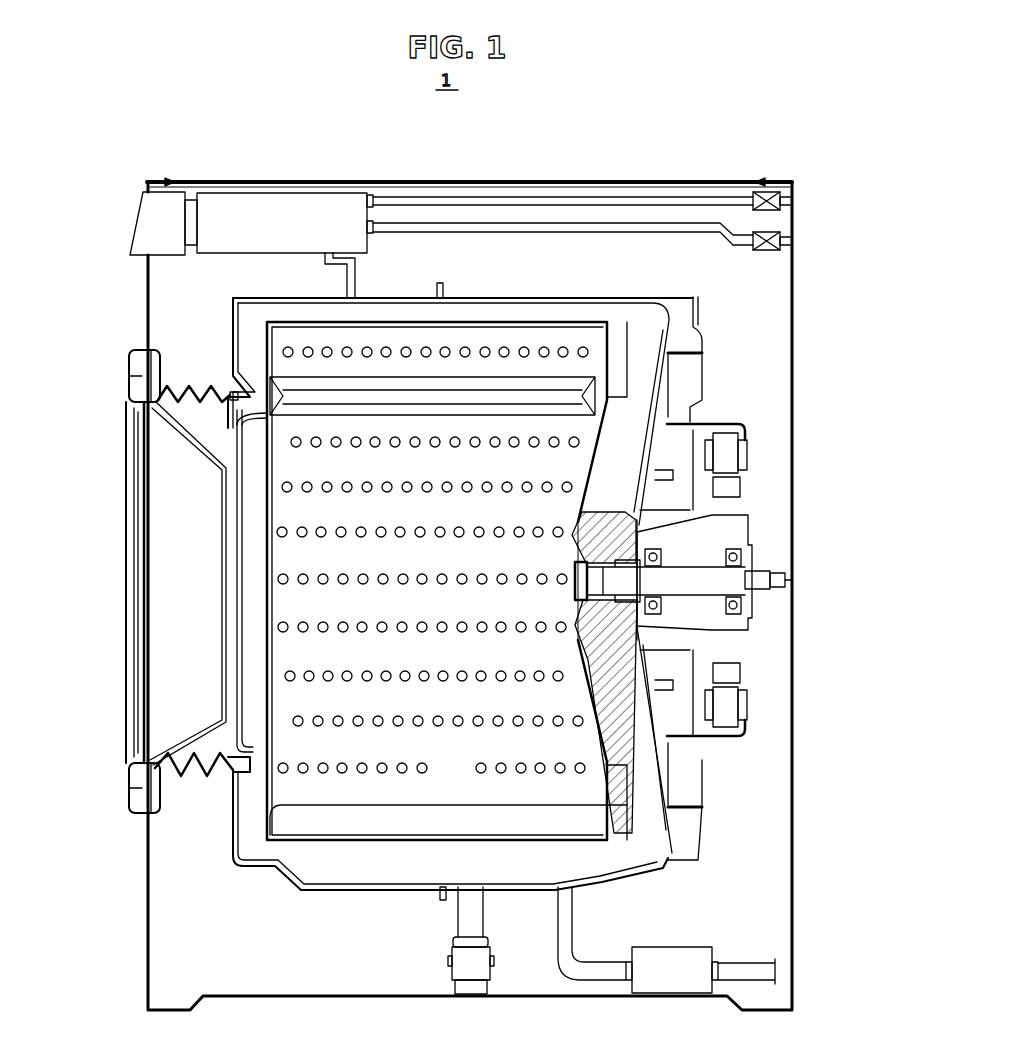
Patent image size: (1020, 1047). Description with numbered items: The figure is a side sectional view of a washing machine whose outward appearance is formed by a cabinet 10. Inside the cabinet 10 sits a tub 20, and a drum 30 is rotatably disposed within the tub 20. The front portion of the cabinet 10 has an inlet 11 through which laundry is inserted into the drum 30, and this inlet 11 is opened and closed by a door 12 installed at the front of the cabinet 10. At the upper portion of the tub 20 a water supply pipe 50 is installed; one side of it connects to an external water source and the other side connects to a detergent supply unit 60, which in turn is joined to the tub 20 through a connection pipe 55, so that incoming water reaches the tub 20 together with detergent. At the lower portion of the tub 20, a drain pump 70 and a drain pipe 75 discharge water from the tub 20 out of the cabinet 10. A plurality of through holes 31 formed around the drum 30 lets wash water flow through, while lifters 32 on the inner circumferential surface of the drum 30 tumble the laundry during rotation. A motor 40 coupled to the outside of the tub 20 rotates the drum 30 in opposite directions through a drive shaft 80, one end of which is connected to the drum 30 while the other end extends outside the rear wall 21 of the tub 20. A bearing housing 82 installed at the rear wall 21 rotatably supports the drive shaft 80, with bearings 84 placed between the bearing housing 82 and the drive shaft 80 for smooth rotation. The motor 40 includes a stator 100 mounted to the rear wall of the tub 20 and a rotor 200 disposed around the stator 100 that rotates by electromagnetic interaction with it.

The cabinet 10 is at (126, 295).
The inlet 11 is at (203, 393).
The door 12 is at (128, 590).
The tub 20 is at (549, 278).
The rear wall 21 is at (700, 382).
The drum 30 is at (447, 540).
The through holes 31 is at (480, 530).
The lifters 32 is at (398, 407).
The motor 40 is at (782, 580).
The water supply pipe 50 is at (640, 228).
The connection pipe 55 is at (355, 275).
The detergent supply unit 60 is at (298, 215).
The drain pump 70 is at (697, 955).
The drain pipe 75 is at (575, 920).
The drive shaft 80 is at (712, 582).
The bearing housing 82 is at (720, 633).
The bearings 84 is at (745, 604).
The stator 100 is at (747, 453).
The rotor 200 is at (747, 487).